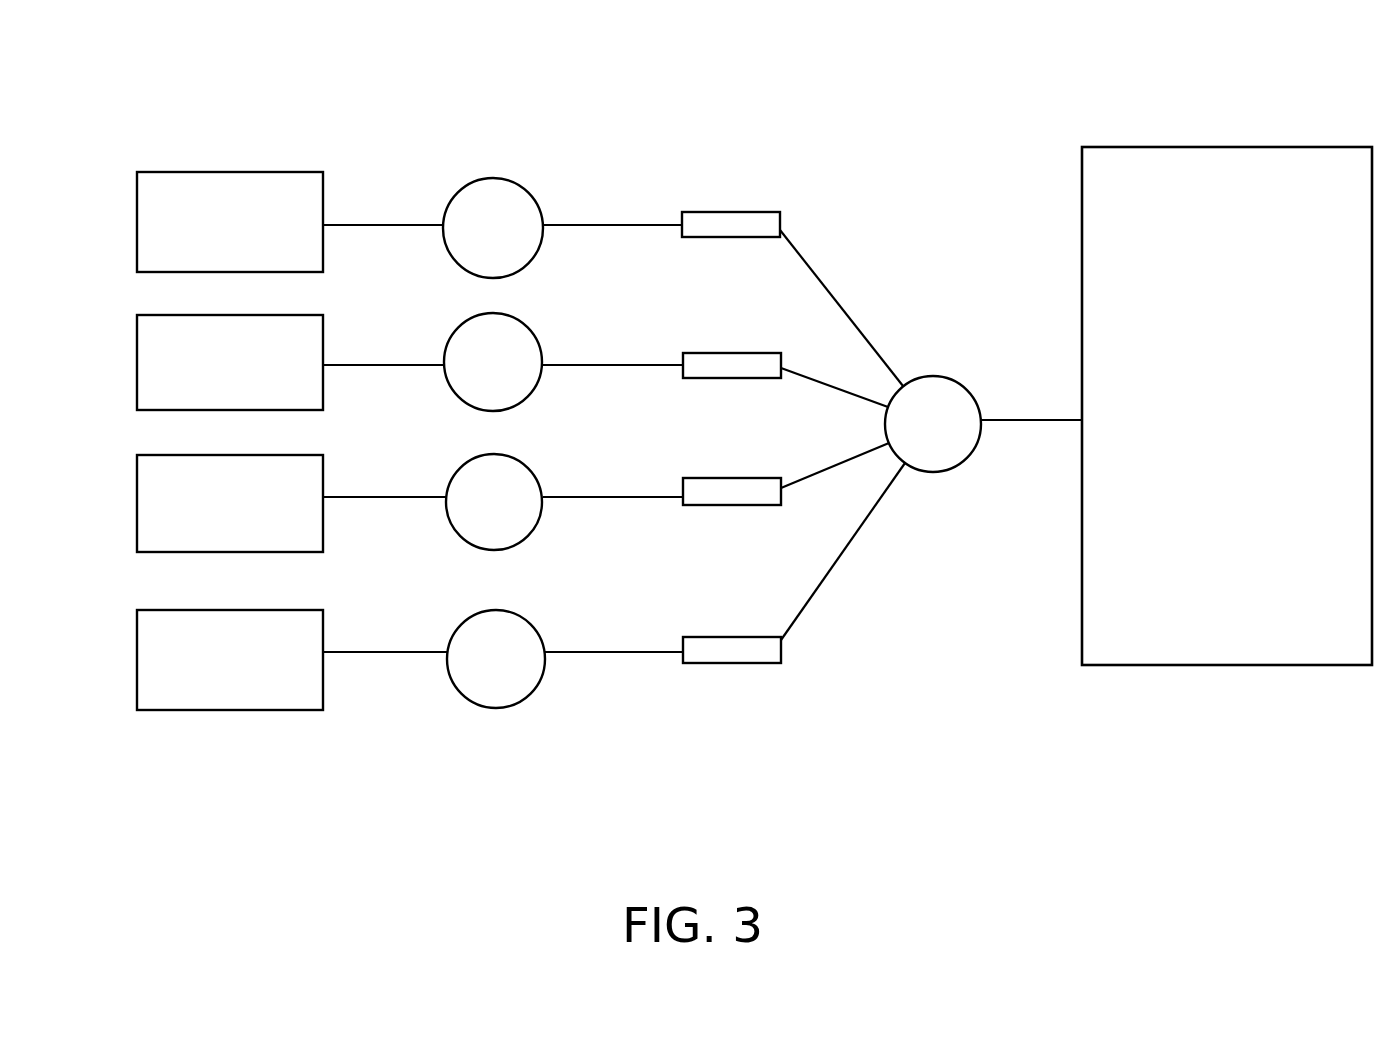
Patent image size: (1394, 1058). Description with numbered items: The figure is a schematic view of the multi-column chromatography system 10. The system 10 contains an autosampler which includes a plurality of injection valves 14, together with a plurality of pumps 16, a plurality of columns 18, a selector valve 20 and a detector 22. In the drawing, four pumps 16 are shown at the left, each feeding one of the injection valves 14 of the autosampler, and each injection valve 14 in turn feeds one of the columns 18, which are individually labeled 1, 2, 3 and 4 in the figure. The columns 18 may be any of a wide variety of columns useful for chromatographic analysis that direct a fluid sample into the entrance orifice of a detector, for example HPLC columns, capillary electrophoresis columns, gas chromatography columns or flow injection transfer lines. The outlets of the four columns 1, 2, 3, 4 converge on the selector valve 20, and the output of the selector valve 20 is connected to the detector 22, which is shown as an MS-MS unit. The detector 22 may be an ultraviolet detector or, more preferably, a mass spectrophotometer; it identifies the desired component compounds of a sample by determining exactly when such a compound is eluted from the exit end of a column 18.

The multi-column chromatography system 10 is at (88, 746).
The injection valve 14 is at (513, 162).
The pump 16 is at (231, 155).
The column 18 is at (724, 180).
The injection valve 1 is at (710, 224).
The injection valve 2 is at (710, 364).
The injection valve 3 is at (715, 491).
The injection valve 4 is at (717, 649).
The selector valve 20 is at (946, 353).
The detector 22 is at (1208, 279).